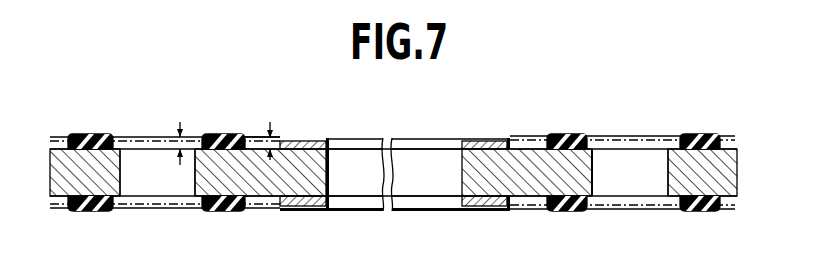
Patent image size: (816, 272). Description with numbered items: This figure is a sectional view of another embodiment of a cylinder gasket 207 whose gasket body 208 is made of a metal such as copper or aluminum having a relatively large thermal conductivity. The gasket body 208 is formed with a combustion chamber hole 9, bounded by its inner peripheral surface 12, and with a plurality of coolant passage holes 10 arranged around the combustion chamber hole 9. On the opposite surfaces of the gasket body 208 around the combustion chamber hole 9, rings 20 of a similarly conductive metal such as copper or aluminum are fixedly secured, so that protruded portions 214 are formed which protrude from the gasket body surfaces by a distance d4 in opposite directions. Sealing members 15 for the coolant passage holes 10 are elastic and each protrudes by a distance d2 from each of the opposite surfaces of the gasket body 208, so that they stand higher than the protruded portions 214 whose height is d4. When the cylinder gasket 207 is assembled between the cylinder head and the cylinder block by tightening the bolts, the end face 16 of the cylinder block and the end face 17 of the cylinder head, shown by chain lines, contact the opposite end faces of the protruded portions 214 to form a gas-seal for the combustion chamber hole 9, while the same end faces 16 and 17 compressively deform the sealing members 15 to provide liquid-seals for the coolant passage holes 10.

The combustion chamber hole 9 is at (433, 193).
The coolant passage holes 10 is at (123, 166).
The inner peripheral surface 12 is at (329, 172).
The sealing members 15 is at (214, 137).
The end face of the cylinder block 16 is at (142, 205).
The end face of the cylinder head 17 is at (261, 136).
The rings 20 is at (313, 141).
The cylinder gasket 207 is at (531, 131).
The gasket body 208 is at (301, 194).
The protruded portions 214 is at (304, 140).
The protrusion distance of sealing member d2 is at (188, 137).
The protrusion distance of protruded portion d4 is at (279, 139).